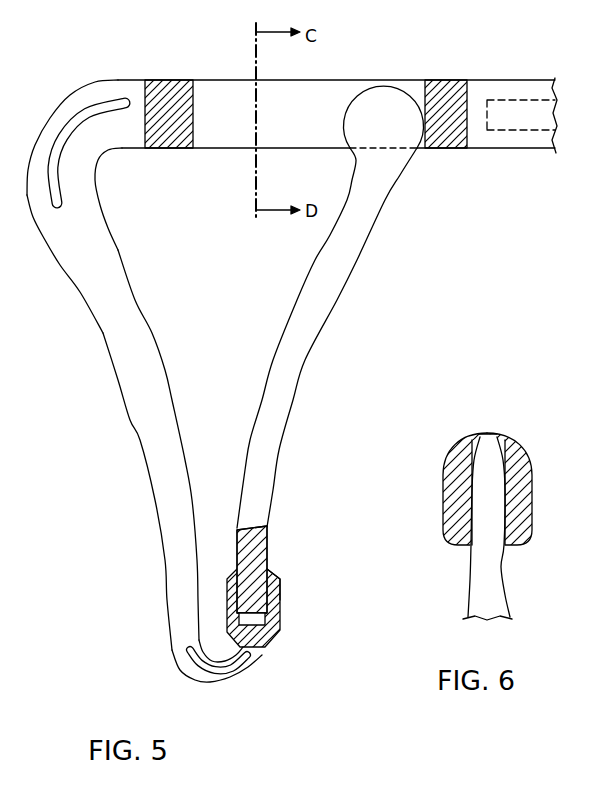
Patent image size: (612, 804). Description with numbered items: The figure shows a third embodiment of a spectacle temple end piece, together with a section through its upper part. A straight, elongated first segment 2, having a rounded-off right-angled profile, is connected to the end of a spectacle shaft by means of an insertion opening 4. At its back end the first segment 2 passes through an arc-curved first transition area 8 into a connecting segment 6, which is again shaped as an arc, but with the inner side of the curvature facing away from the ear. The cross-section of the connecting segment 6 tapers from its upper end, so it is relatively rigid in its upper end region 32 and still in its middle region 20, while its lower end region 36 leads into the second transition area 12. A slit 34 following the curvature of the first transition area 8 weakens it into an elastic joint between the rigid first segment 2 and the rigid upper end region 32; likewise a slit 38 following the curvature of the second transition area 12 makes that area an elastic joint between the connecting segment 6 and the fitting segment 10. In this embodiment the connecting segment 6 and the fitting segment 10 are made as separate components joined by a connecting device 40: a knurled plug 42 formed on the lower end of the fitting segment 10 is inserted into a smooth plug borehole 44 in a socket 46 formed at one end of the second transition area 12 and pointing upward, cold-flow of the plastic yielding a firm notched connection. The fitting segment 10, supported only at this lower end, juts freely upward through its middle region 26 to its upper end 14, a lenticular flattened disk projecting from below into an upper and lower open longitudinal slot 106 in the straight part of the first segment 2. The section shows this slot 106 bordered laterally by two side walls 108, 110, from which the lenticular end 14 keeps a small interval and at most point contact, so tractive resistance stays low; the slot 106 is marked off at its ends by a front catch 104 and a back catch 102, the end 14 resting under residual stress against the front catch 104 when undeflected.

In FIG. 5, the first segment 2 is at (232, 70).
In FIG. 5, the insertion opening 4 is at (500, 100).
In FIG. 5, the connecting segment 6 is at (113, 377).
In FIG. 5, the first transition area 8 is at (78, 95).
In FIG. 5, the fitting segment 10 is at (311, 379).
In FIG. 5, the second transition area 12 is at (220, 680).
In FIG. 5, the upper end of the fitting segment 14 is at (413, 166).
In FIG. 6, the upper end of the fitting segment 14 is at (494, 422).
In FIG. 5, the middle region of the connecting segment 20 is at (153, 352).
In FIG. 5, the middle region of the fitting segment 26 is at (275, 437).
In FIG. 6, the middle region of the fitting segment 26 is at (487, 607).
In FIG. 5, the upper end region of the connecting segment 32 is at (77, 262).
In FIG. 5, the curved slot 34 is at (124, 100).
In FIG. 5, the lower end region of the connecting segment 36 is at (172, 625).
In FIG. 5, the slit 38 is at (200, 667).
In FIG. 5, the connecting device 40 is at (292, 609).
In FIG. 5, the plug 42 is at (267, 537).
In FIG. 5, the plug borehole 44 is at (258, 622).
In FIG. 5, the socket 46 is at (277, 577).
In FIG. 5, the back catch 102 is at (193, 128).
In FIG. 5, the front catch 104 is at (422, 80).
In FIG. 5, the longitudinal slot 106 is at (322, 85).
In FIG. 5, the side wall 108 is at (319, 135).
In FIG. 6, the side wall 108 is at (455, 538).
In FIG. 6, the side wall 110 is at (523, 537).